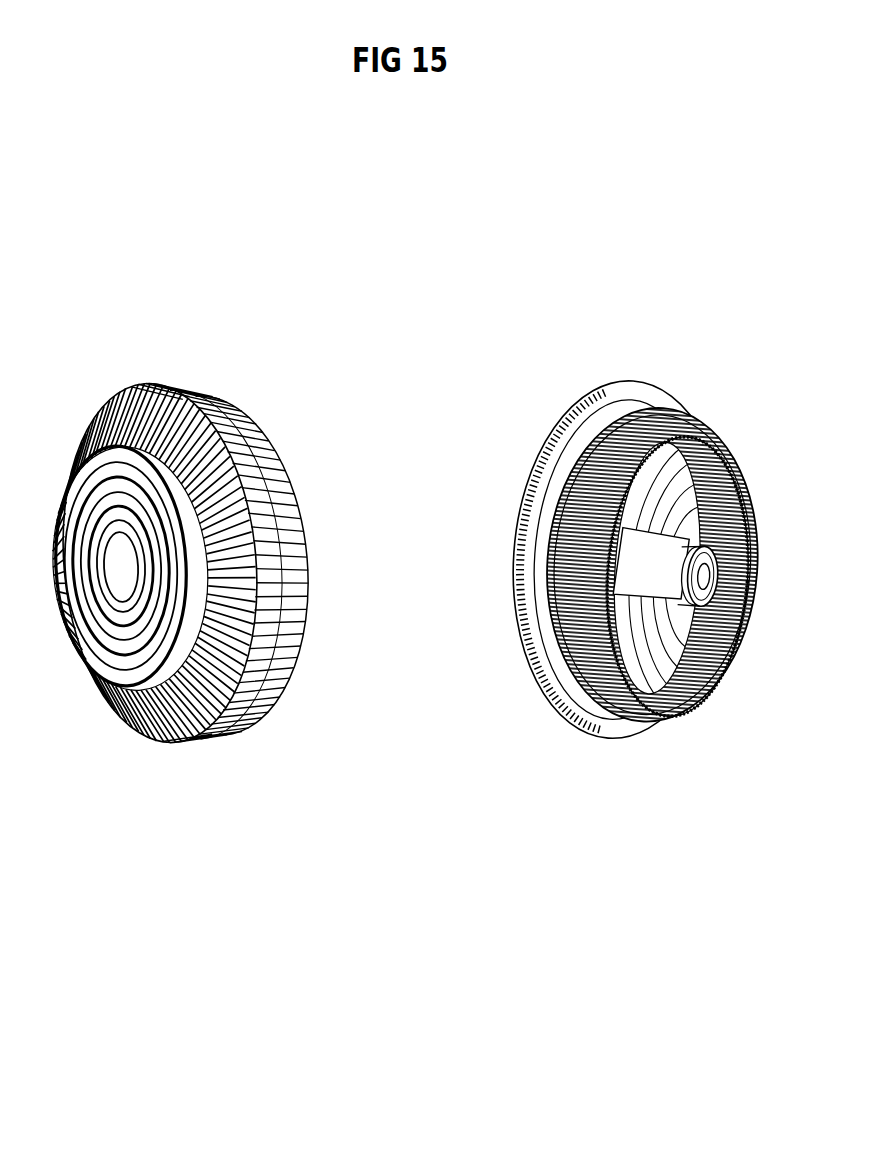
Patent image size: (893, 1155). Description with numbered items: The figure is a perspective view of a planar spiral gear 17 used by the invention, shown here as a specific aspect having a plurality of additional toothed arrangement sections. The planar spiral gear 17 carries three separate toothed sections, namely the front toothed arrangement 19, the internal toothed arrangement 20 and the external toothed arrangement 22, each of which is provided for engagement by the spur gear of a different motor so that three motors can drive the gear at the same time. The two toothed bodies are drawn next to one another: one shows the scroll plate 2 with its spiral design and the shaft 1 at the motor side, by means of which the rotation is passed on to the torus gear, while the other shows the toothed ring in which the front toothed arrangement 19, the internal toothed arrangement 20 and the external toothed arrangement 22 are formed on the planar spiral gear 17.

The shaft 1 is at (667, 521).
The scroll plate 2 is at (108, 680).
The planar spiral gear 17 is at (602, 727).
The front toothed arrangement 19 is at (184, 740).
The internal toothed arrangement 20 is at (738, 447).
The external toothed arrangement 22 is at (273, 693).